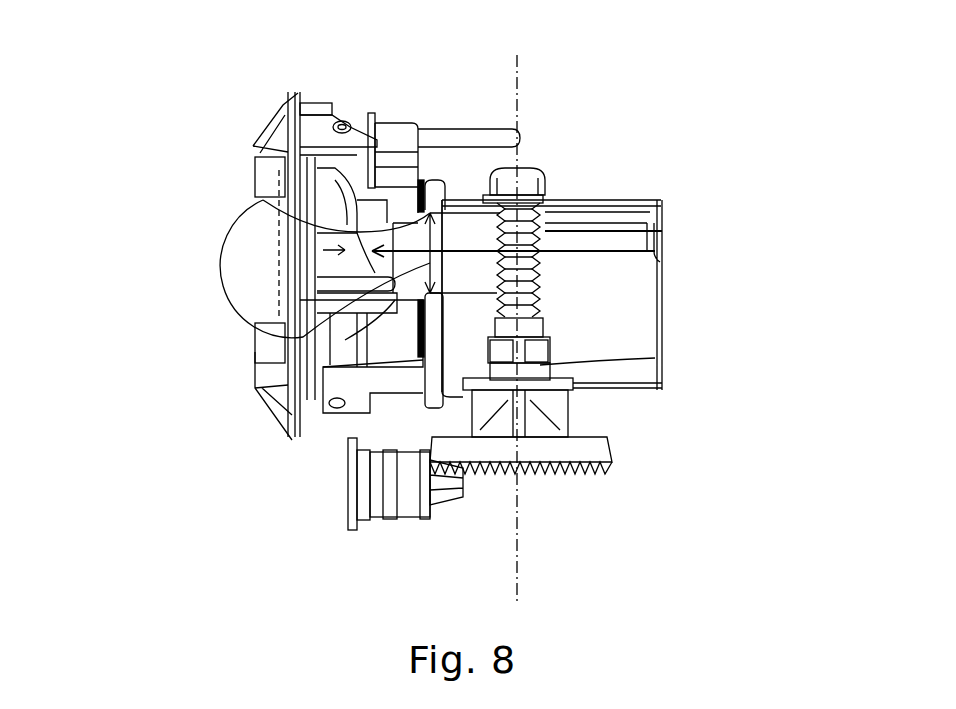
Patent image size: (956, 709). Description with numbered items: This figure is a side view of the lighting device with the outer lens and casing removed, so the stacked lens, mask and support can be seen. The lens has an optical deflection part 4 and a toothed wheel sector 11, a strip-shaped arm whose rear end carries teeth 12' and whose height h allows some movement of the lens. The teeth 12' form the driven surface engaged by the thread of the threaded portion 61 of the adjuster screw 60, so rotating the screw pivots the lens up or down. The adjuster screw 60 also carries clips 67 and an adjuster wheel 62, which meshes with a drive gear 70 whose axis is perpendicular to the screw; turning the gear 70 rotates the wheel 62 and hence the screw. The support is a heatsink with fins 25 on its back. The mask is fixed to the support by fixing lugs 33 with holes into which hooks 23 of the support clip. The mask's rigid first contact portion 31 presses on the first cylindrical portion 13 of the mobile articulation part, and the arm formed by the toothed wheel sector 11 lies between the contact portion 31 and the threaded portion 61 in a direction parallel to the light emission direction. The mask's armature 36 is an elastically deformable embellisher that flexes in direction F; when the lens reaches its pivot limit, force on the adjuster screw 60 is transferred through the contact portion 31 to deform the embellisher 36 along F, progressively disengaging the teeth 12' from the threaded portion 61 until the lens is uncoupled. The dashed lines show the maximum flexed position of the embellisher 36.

The deflection part 4 is at (232, 263).
The toothed wheel sector 11 is at (453, 215).
The teeth 12' is at (551, 139).
The first cylindrical portion 13 is at (436, 160).
The hooks 23 is at (343, 125).
The fins 25 is at (632, 297).
The first contact portion 31 is at (261, 215).
The fixing lugs 33 is at (317, 128).
The armature 36 is at (253, 320).
The adjuster screw 60 is at (538, 490).
The threaded portion 61 is at (550, 213).
The adjuster wheel 62 is at (583, 475).
The clips 67 is at (540, 343).
The drive gear 70 is at (363, 482).
The flexing direction F is at (432, 250).
The height h is at (430, 215).